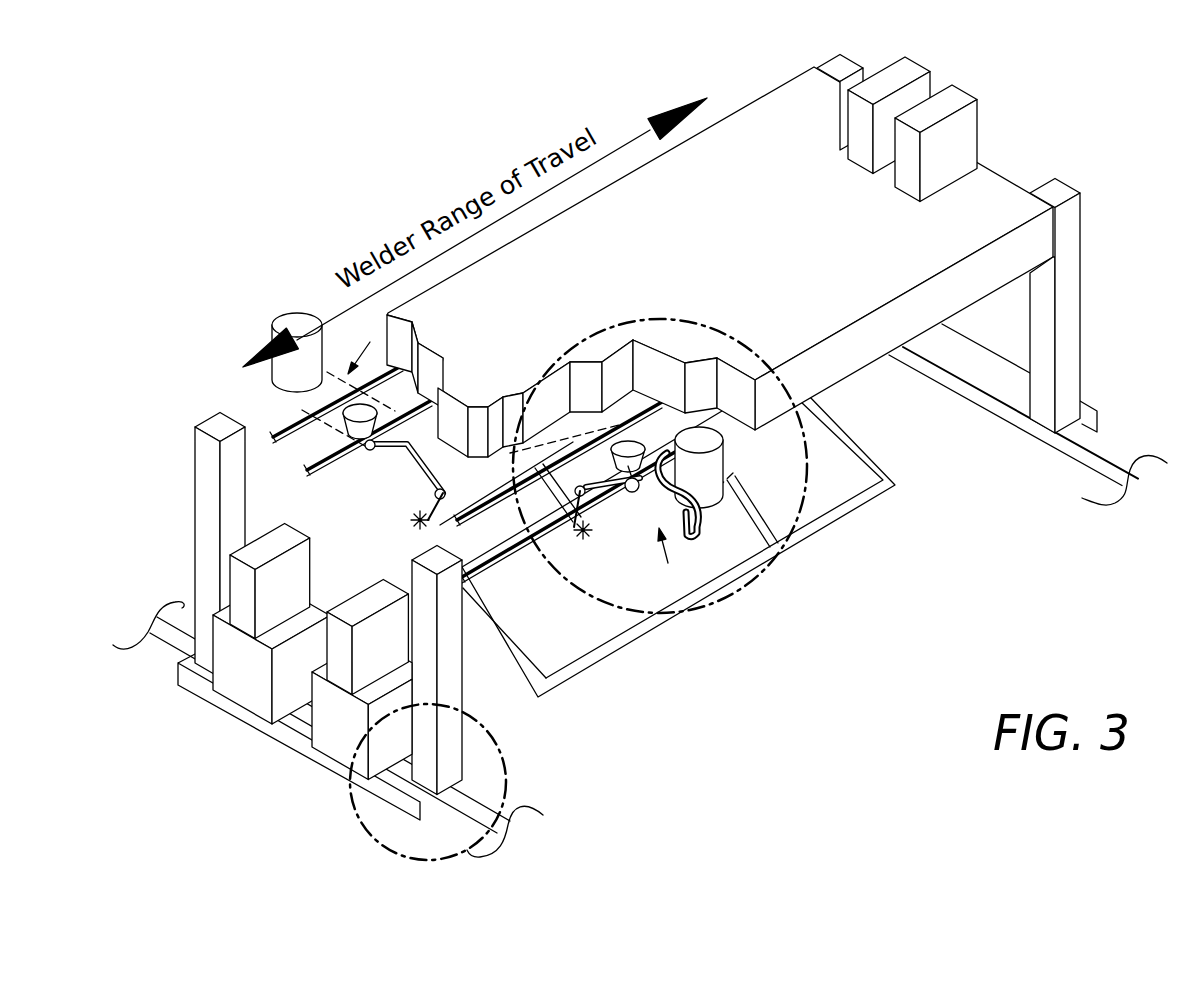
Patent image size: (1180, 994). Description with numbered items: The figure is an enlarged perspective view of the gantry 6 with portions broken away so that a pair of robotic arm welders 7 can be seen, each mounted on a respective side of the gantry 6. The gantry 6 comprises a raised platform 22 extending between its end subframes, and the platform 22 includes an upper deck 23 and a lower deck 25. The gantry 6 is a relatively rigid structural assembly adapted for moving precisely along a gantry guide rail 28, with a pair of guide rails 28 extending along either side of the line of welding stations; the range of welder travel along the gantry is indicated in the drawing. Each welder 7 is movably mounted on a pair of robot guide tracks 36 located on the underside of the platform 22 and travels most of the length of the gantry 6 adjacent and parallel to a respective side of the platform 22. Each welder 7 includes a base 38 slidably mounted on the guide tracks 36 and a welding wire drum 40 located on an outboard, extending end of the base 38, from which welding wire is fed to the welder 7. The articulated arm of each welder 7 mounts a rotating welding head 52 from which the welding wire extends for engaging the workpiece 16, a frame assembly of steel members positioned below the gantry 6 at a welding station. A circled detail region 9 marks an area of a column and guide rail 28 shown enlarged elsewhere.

The gantry 6 is at (774, 329).
The robotic arm welder 7 is at (517, 450).
The detail region shown in FIG. 9 is at (331, 815).
The workpiece 16 is at (893, 487).
The raised platform 22 is at (594, 291).
The upper deck 23 is at (541, 327).
The lower deck 25 is at (845, 380).
The gantry guide rail 28 is at (1115, 452).
The robot guide track 36 is at (309, 419).
The base 38 is at (300, 410).
The welding wire drum 40 is at (312, 318).
The welding head 52 is at (440, 494).